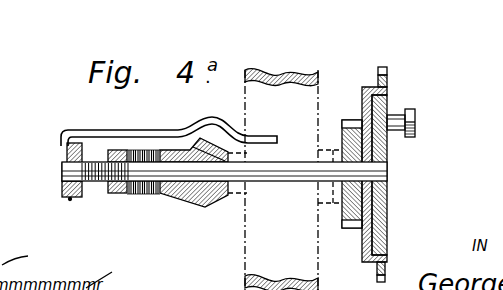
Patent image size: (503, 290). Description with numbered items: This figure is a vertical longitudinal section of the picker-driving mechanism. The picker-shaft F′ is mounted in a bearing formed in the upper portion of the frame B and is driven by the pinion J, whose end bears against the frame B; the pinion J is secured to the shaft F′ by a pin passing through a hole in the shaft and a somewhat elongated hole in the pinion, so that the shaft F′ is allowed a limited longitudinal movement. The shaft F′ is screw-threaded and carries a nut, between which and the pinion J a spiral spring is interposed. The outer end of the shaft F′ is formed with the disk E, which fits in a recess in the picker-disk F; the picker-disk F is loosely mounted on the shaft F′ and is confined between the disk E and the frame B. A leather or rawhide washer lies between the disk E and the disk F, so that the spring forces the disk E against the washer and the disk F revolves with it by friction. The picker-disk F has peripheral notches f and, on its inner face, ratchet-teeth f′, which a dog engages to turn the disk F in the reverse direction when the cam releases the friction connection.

The pinion J is at (197, 148).
The frame B is at (281, 179).
The picker-shaft F′ is at (286, 178).
The ratchet-teeth f′ is at (352, 130).
The peripheral notches f is at (388, 71).
The picker-disk F is at (388, 88).
The disk E is at (386, 158).